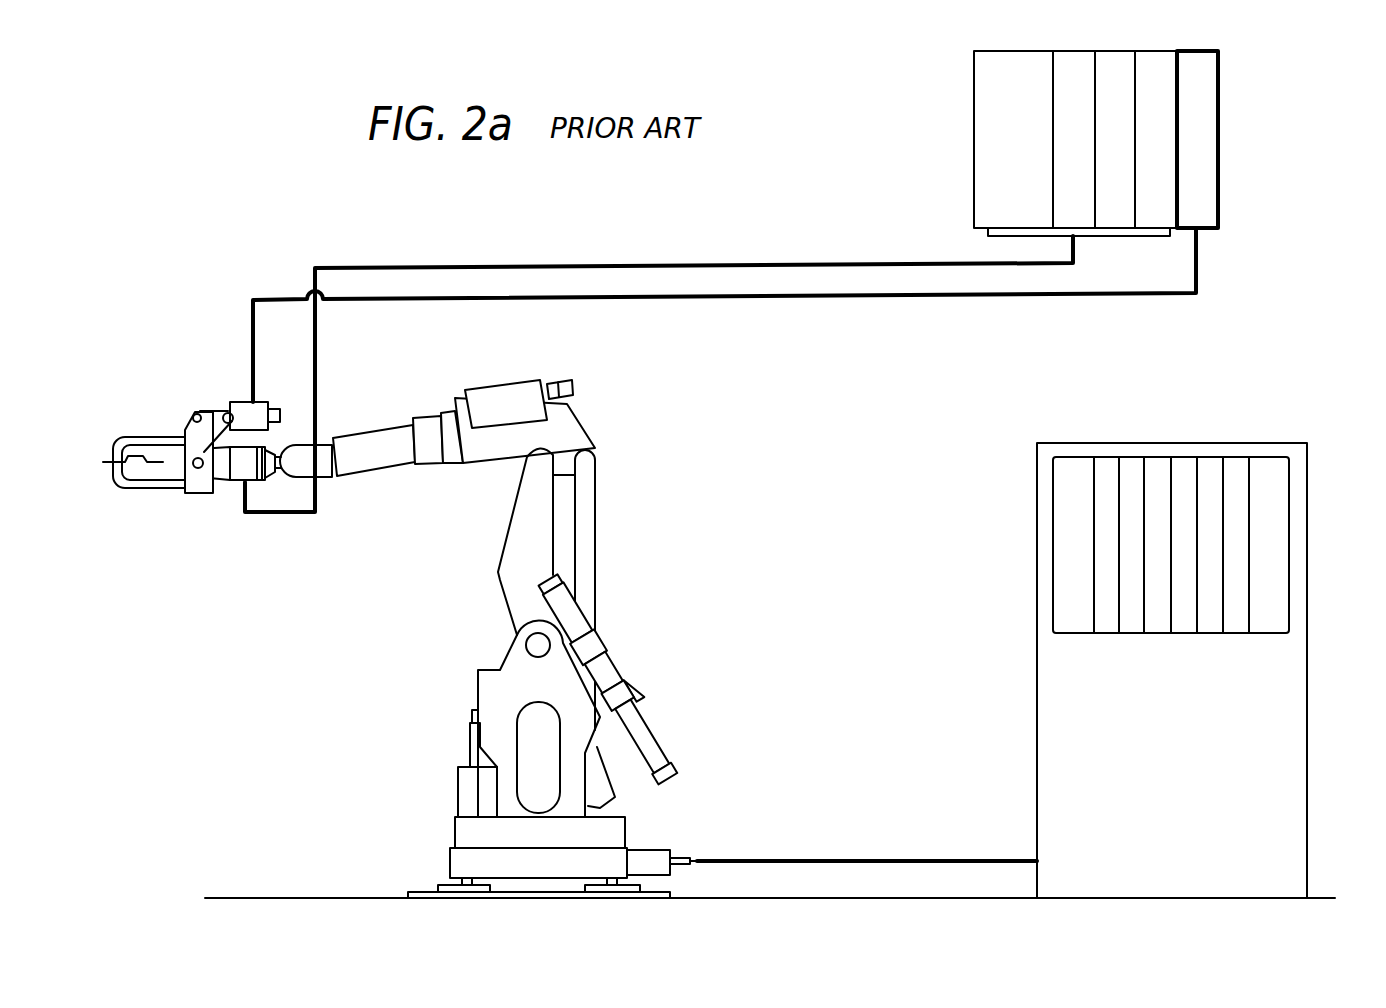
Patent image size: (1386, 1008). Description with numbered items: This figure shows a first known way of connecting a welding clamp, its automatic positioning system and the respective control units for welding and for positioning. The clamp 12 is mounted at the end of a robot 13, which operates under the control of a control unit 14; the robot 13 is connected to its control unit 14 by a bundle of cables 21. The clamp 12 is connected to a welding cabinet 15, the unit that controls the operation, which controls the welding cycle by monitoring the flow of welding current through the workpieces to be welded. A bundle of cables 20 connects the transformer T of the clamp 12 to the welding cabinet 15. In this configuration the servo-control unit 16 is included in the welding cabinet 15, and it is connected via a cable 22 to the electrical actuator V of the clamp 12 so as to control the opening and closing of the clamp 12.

The clamp 12 is at (199, 490).
The robot 13 is at (500, 728).
The control unit 14 is at (1083, 762).
The welding cabinet 15 is at (1018, 163).
The servo-control unit 16 is at (1200, 98).
The bundle of cables 20 is at (668, 265).
The bundle of cables 21 is at (815, 861).
The cable 22 is at (777, 297).